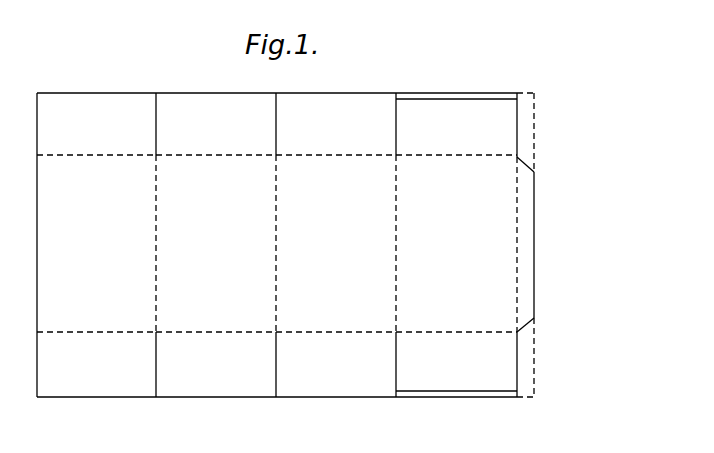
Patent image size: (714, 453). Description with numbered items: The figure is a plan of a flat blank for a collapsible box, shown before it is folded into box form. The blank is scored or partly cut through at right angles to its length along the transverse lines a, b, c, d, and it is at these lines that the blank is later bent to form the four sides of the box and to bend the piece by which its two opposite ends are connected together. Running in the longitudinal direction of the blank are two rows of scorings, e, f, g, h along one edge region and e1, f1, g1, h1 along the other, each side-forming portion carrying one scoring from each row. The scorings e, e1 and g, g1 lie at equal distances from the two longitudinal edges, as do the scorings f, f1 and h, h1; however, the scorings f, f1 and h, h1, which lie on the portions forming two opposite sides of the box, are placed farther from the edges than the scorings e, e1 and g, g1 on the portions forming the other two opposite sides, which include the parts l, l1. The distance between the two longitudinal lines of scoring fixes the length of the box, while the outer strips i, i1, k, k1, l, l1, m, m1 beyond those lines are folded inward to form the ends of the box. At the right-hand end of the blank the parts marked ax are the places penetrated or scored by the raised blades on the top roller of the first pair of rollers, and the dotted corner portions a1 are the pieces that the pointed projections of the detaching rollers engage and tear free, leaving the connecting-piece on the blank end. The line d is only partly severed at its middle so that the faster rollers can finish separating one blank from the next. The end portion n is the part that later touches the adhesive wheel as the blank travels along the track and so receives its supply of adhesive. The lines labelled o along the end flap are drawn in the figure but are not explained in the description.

The transverse score line a is at (156, 245).
The transverse score line b is at (275, 245).
The transverse score line c is at (391, 245).
The transverse score line d is at (514, 244).
The longitudinal scoring e is at (96, 156).
The longitudinal scoring f is at (216, 158).
The longitudinal scoring g is at (336, 157).
The longitudinal scoring h is at (456, 158).
The end-forming part i is at (96, 124).
The end-forming part k is at (216, 114).
The end-forming part l is at (336, 114).
The end-forming part m is at (456, 125).
The longitudinal scoring e1 is at (96, 331).
The longitudinal scoring f1 is at (216, 332).
The longitudinal scoring g1 is at (336, 332).
The longitudinal scoring h1 is at (456, 331).
The end-forming part i1 is at (96, 364).
The end-forming part k1 is at (216, 378).
The end-forming part l1 is at (336, 378).
The end-forming part m1 is at (456, 364).
The adhesive-receiving portion n is at (524, 219).
The fold line of end flap o is at (458, 98).
The corner-piece a1 is at (527, 143).
The scored part ax is at (530, 168).